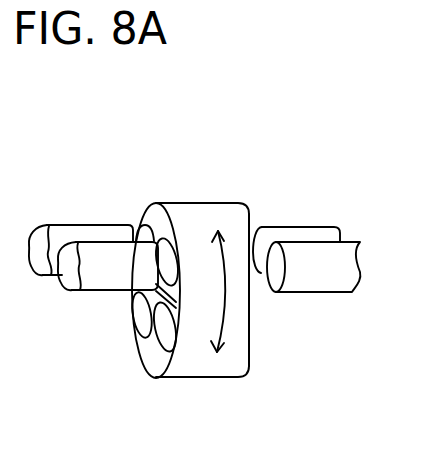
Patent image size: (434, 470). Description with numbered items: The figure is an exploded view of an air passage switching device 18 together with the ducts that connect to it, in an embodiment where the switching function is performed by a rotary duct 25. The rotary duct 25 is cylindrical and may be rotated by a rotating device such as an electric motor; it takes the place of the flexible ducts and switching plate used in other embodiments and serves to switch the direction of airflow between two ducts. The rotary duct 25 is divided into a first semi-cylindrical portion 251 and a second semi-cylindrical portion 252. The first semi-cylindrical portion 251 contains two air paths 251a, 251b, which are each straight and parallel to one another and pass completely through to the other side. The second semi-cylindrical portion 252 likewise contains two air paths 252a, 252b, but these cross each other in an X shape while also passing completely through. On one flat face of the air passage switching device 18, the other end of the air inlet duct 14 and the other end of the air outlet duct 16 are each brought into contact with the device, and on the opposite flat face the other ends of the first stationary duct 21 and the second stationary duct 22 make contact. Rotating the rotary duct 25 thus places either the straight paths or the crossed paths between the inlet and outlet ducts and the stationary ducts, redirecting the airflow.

The air inlet duct 14 is at (102, 225).
The air outlet duct 16 is at (107, 290).
The air passage switching device 18 is at (252, 360).
The first stationary duct 21 is at (303, 227).
The second stationary duct 22 is at (330, 293).
The rotary duct 25 is at (229, 203).
The first semi-cylindrical portion 251 is at (136, 191).
The air path 251a is at (140, 235).
The air path 251b is at (176, 238).
The second semi-cylindrical portion 252 is at (121, 370).
The air path 252a is at (148, 326).
The air path 252b is at (164, 355).